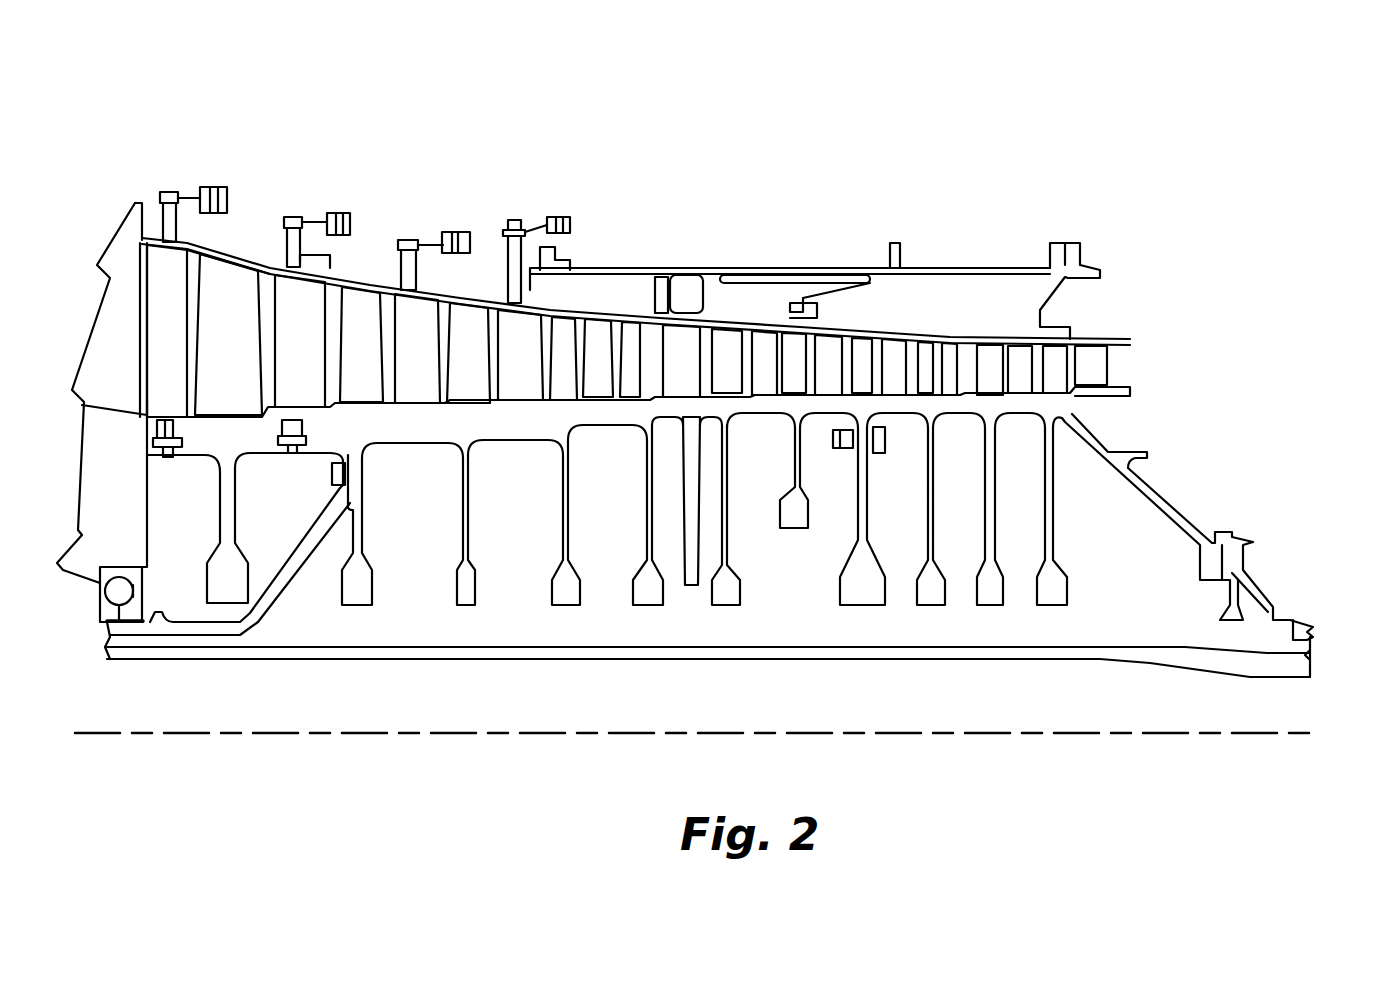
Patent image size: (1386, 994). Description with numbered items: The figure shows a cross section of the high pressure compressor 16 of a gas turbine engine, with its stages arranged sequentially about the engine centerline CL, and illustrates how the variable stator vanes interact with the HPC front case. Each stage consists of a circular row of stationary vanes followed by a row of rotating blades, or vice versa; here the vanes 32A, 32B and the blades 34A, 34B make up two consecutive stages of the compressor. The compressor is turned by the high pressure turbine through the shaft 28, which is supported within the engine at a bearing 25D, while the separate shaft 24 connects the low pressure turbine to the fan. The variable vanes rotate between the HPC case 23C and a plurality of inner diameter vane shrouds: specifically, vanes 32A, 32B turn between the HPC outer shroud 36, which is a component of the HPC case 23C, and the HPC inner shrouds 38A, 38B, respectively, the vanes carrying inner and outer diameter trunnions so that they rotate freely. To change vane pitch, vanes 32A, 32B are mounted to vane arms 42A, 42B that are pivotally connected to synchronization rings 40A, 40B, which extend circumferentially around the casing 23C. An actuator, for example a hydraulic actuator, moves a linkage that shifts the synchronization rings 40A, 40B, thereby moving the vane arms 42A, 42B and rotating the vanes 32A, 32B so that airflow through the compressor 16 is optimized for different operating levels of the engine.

The high pressure compressor 16 is at (417, 158).
The HPC case 23C is at (680, 250).
The shaft 24 is at (565, 650).
The bearing 25D is at (97, 608).
The shaft 28 is at (120, 623).
The vane 32A is at (430, 356).
The vane 32B is at (535, 356).
The blade 34A is at (360, 307).
The blade 34B is at (463, 320).
The HPC outer shroud 36 is at (367, 287).
The HPC inner shroud 38A is at (445, 432).
The HPC inner shroud 38B is at (548, 430).
The synchronization ring 40A is at (461, 232).
The synchronization ring 40B is at (580, 220).
The vane arm 42A is at (418, 234).
The vane arm 42B is at (530, 208).
The centerline CL is at (1240, 733).